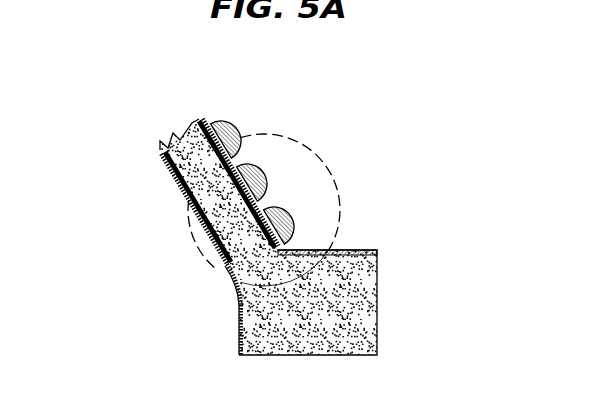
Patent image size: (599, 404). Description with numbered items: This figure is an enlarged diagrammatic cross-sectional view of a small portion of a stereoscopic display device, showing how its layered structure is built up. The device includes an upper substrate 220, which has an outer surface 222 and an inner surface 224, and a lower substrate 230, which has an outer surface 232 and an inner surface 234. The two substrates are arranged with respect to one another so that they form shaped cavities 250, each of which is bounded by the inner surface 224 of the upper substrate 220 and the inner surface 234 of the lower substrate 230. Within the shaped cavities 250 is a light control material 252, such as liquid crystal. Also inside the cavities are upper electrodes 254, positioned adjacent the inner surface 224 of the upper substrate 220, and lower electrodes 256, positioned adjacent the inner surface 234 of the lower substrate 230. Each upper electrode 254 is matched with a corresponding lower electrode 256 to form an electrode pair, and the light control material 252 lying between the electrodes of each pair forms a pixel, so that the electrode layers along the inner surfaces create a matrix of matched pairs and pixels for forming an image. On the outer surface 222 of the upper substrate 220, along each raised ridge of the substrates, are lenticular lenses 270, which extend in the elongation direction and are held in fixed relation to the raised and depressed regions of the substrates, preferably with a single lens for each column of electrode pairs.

The upper substrate 220 is at (195, 120).
The outer surface 222 is at (197, 122).
The inner surface 224 is at (203, 128).
The lower substrate 230 is at (241, 332).
The outer surface 232 is at (240, 308).
The inner surface 234 is at (237, 288).
The shaped cavities 250 is at (362, 302).
The light control material 252 is at (158, 143).
The upper electrodes 254 is at (296, 144).
The lower electrodes 256 is at (222, 258).
The lenticular lenses 270 is at (233, 128).